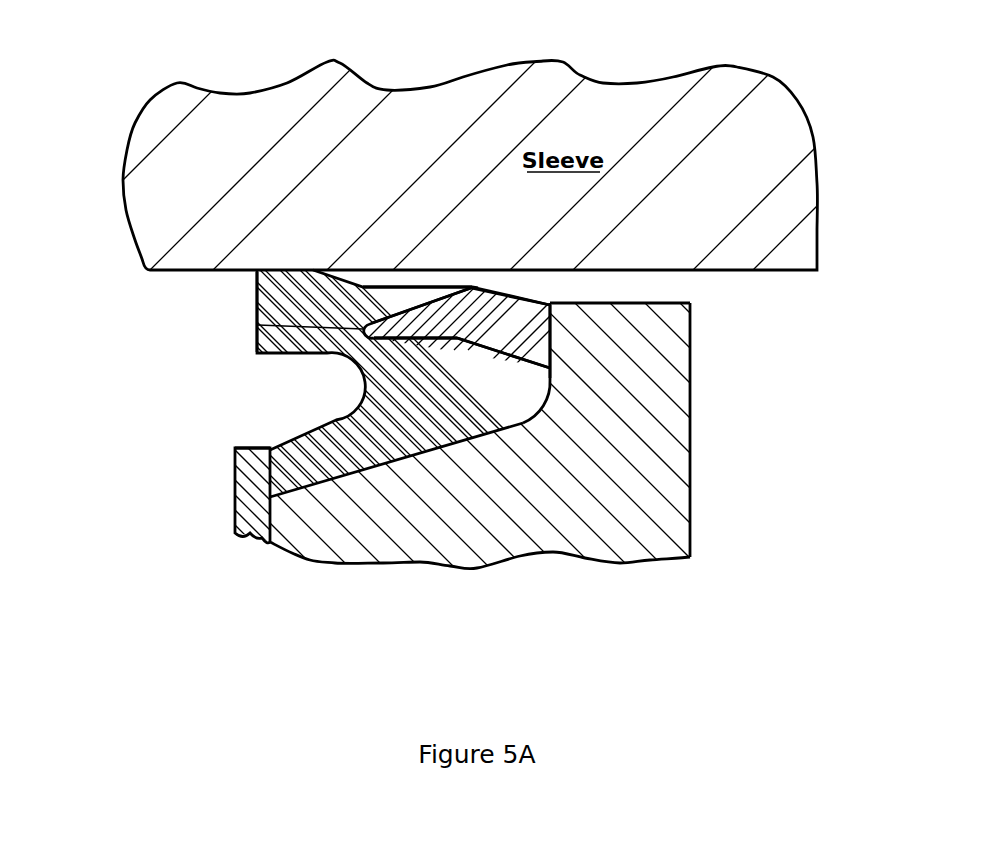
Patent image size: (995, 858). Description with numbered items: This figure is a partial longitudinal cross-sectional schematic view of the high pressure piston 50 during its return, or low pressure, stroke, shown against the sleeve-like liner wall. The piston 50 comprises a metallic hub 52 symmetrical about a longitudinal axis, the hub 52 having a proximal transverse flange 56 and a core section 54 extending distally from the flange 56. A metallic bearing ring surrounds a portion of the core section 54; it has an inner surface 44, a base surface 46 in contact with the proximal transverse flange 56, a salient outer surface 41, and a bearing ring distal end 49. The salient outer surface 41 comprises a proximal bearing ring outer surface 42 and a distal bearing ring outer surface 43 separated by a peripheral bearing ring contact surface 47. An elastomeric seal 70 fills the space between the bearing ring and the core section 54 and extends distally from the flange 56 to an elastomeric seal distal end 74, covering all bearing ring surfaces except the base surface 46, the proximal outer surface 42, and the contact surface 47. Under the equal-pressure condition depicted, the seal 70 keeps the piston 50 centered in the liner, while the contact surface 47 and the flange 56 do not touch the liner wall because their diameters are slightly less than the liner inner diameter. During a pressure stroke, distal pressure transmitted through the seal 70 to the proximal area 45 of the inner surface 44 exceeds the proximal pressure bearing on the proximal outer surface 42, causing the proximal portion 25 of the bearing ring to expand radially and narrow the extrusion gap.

The proximal portion of bearing ring 25 is at (535, 334).
The salient outer surface 41 is at (468, 287).
The proximal bearing ring outer surface 42 is at (523, 293).
The distal bearing ring outer surface 43 is at (400, 313).
The inner surface 44 is at (462, 340).
The proximal area of inner surface 45 is at (515, 358).
The base surface 46 is at (550, 342).
The peripheral bearing ring contact surface 47 is at (478, 287).
The bearing ring distal end 49 is at (258, 325).
The high pressure piston 50 is at (192, 492).
The metallic hub 52 is at (707, 448).
The core section 54 is at (359, 531).
The proximal transverse flange 56 is at (647, 334).
The elastomeric seal 70 is at (417, 410).
The elastomeric seal distal end 74 is at (241, 340).